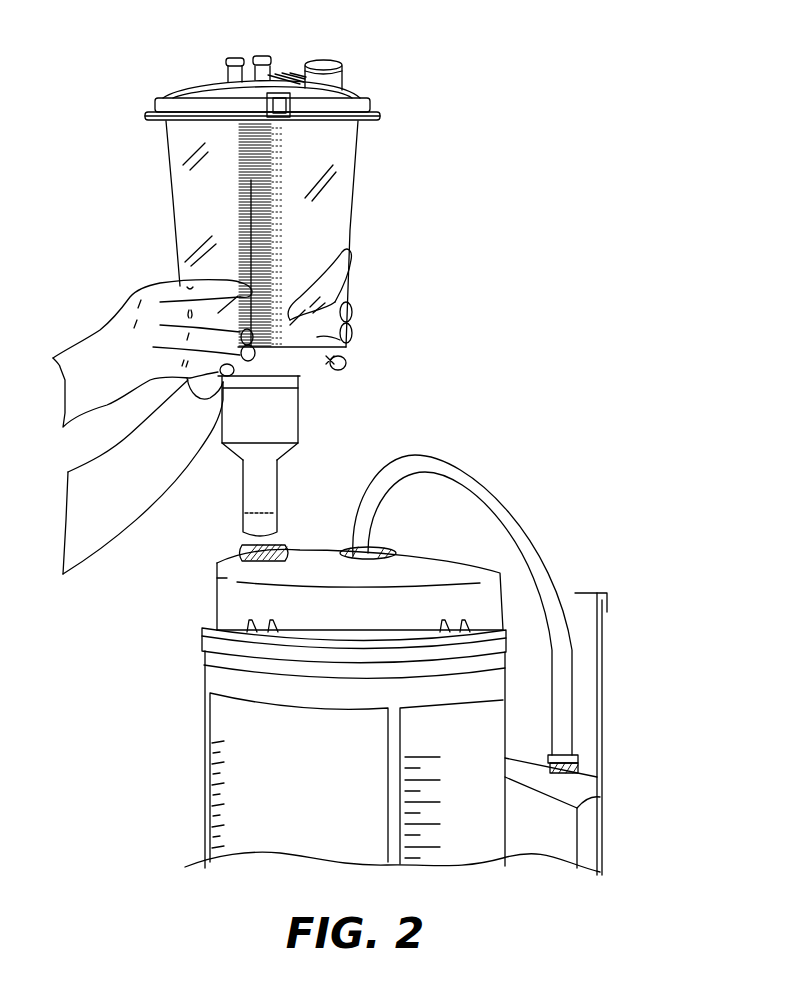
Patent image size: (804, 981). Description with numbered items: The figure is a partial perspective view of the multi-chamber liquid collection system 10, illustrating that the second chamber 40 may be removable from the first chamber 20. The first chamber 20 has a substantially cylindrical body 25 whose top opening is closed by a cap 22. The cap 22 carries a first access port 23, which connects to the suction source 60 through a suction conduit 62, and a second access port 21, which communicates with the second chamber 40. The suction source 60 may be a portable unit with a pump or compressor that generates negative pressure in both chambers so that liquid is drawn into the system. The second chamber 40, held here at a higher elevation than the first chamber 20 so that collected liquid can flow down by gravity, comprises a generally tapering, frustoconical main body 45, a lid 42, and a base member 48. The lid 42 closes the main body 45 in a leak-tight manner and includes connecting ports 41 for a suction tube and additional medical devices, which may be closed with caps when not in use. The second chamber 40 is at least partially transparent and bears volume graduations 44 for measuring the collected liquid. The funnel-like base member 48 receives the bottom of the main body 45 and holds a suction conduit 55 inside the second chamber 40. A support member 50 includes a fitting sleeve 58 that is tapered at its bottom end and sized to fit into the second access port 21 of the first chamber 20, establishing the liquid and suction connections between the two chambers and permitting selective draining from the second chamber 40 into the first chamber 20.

The multi-chamber liquid collection system 10 is at (615, 247).
The first chamber 20 is at (168, 755).
The second access port 21 is at (240, 550).
The cap 22 is at (213, 592).
The first access port 23 is at (367, 548).
The cylindrical body 25 is at (273, 820).
The second chamber 40 is at (400, 163).
The connecting ports 41 is at (316, 60).
The lid 42 is at (363, 98).
The volume graduations 44 is at (207, 155).
The main body 45 is at (200, 190).
The base member 48 is at (300, 388).
The support member 50 is at (336, 415).
The suction conduit 55 is at (280, 234).
The fitting sleeve 58 is at (258, 502).
The suction source 60 is at (565, 830).
The suction conduit 62 is at (508, 488).